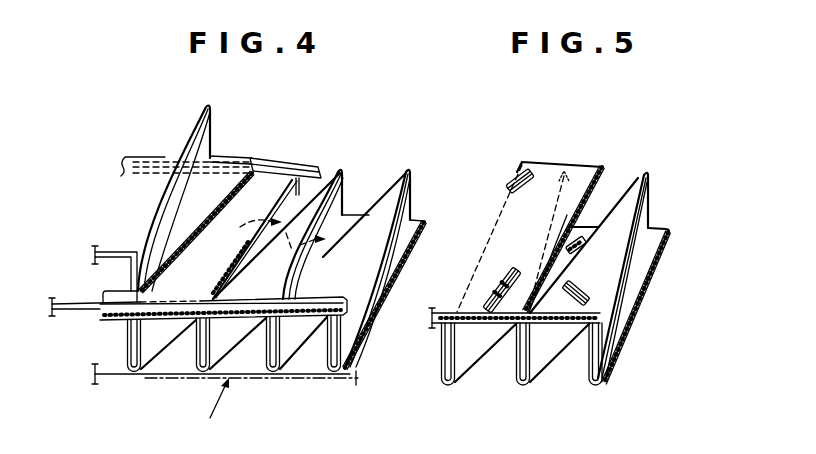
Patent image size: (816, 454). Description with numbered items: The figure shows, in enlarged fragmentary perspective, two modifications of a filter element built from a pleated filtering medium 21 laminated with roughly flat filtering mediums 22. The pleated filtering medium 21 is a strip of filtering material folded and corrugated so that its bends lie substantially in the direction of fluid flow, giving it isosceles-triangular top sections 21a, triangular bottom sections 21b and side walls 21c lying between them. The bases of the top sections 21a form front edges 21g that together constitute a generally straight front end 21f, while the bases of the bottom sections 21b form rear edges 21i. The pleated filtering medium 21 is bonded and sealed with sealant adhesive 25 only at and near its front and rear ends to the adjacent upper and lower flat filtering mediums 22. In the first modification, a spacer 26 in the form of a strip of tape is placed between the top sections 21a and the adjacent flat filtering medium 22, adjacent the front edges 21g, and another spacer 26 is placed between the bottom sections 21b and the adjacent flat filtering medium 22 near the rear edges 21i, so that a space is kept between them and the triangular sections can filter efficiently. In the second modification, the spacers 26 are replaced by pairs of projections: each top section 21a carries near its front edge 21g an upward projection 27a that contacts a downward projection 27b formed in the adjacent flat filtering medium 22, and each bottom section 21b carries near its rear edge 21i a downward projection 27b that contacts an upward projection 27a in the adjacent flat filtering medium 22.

In FIG. 4, the pleated filtering medium 21 is at (424, 190).
In FIG. 5, the pleated filtering medium 21 is at (659, 190).
In FIG. 4, the triangular top section 21a is at (176, 148).
In FIG. 5, the triangular top section 21a is at (632, 190).
In FIG. 4, the triangular bottom section 21b is at (188, 212).
In FIG. 5, the triangular bottom section 21b is at (583, 276).
In FIG. 4, the side wall 21c is at (213, 147).
In FIG. 5, the side wall 21c is at (614, 307).
In FIG. 4, the front end 21f is at (292, 318).
In FIG. 5, the front edge 21g is at (526, 318).
In FIG. 5, the rear edge 21i is at (592, 224).
In FIG. 4, the roughly flat filtering medium 22 is at (198, 267).
In FIG. 5, the roughly flat filtering medium 22 is at (583, 172).
In FIG. 4, the sealant adhesive 25 is at (352, 355).
In FIG. 4, the spacer 26 is at (287, 160).
In FIG. 5, the upward projection 27a is at (512, 170).
In FIG. 5, the downward projection 27b is at (590, 247).